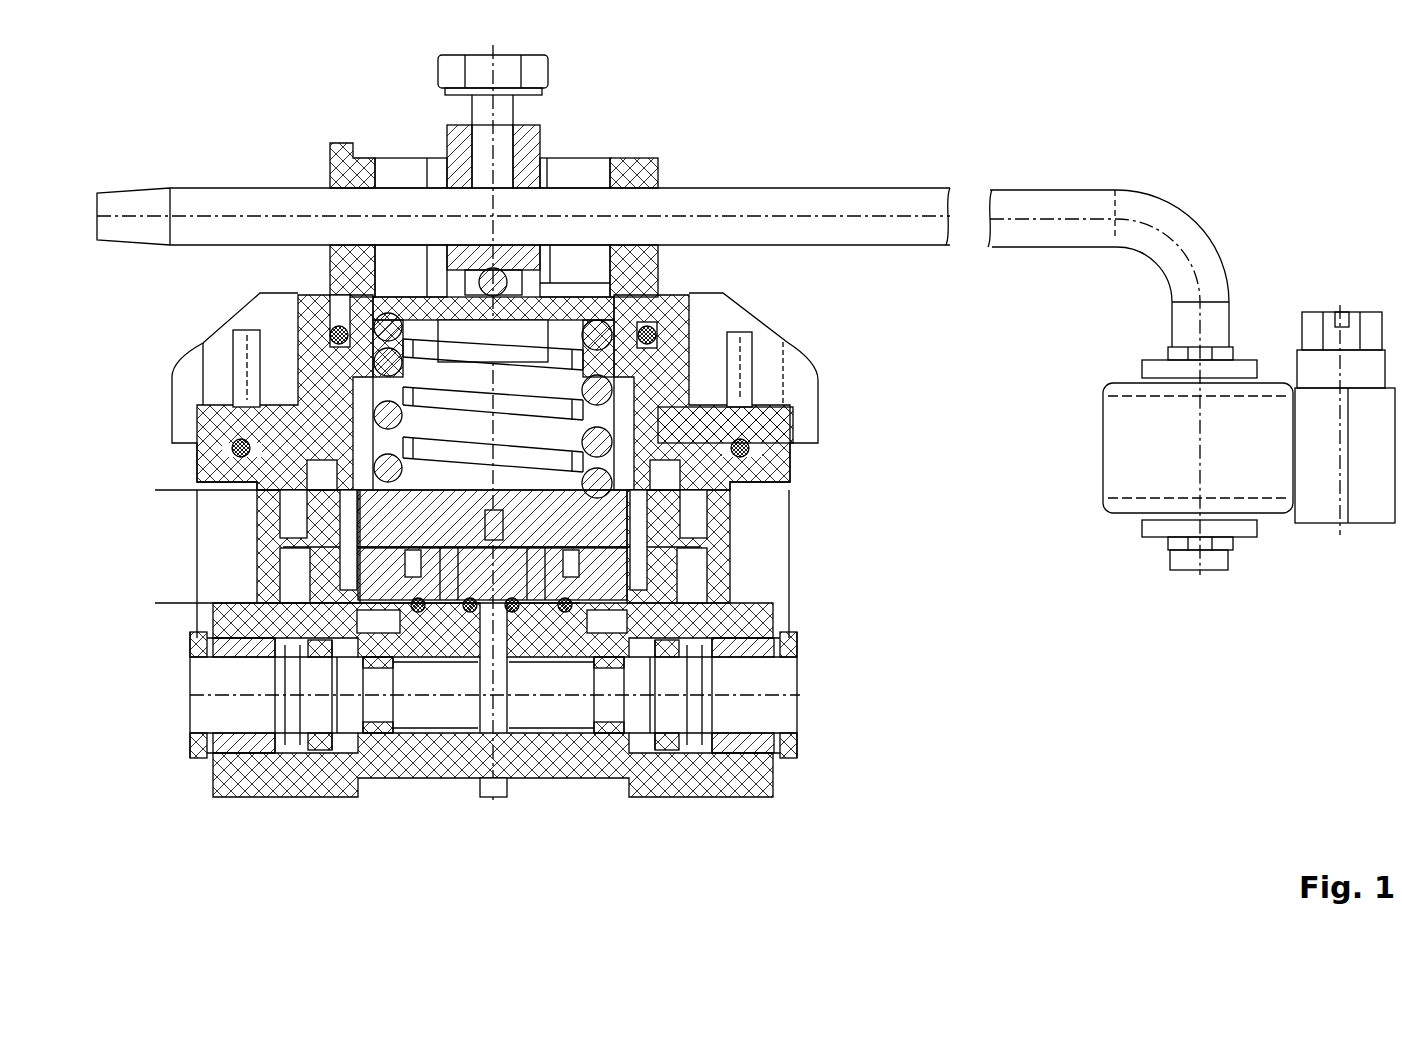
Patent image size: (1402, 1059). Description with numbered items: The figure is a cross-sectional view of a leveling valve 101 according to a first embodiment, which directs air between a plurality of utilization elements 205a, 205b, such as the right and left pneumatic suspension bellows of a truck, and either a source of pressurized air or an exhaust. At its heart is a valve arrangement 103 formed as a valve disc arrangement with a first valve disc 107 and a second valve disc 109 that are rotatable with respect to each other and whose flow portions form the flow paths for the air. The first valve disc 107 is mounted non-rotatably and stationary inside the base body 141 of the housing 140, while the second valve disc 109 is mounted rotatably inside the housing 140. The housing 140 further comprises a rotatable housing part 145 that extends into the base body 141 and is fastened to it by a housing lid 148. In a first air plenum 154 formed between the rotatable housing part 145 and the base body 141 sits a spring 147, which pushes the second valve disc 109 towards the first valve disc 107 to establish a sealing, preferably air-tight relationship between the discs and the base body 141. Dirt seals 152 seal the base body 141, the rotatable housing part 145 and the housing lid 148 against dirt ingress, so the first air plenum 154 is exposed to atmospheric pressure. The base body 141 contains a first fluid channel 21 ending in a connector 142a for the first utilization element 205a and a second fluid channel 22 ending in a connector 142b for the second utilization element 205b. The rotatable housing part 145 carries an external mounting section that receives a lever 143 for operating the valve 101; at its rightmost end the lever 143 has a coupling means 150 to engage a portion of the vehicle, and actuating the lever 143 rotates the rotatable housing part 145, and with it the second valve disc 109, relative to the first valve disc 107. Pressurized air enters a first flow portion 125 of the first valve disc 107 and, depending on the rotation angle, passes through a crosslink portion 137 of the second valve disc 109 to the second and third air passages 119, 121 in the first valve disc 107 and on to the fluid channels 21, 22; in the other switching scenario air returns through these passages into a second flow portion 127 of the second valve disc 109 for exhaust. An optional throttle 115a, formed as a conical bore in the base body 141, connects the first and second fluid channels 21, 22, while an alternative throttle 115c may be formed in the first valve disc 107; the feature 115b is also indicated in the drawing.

The leveling valve 101 is at (762, 84).
The valve arrangement 103 is at (155, 490).
The first valve disc 107 is at (613, 580).
The second valve disc 109 is at (610, 517).
The throttle 115a is at (493, 707).
The second fluid passage 115b is at (507, 540).
The throttle 115c is at (560, 700).
The second air passage 119 is at (637, 653).
The third air passage 121 is at (460, 615).
The first flow portion 125 is at (573, 565).
The second flow portion 127 is at (440, 612).
The crosslink portion 137 is at (490, 525).
The housing 140 is at (170, 326).
The base body 141 is at (713, 542).
The connector 142a is at (739, 753).
The connector 142b is at (248, 753).
The lever 143 is at (826, 205).
The rotatable housing part 145 is at (648, 168).
The spring 147 is at (607, 390).
The housing lid 148 is at (727, 423).
The coupling means 150 is at (1120, 452).
The dirt seal 152 is at (335, 324).
The first air plenum 154 is at (368, 398).
The utilization element 205a is at (808, 695).
The utilization element 205b is at (175, 695).
The first fluid channel 21 is at (600, 653).
The second fluid channel 22 is at (445, 707).